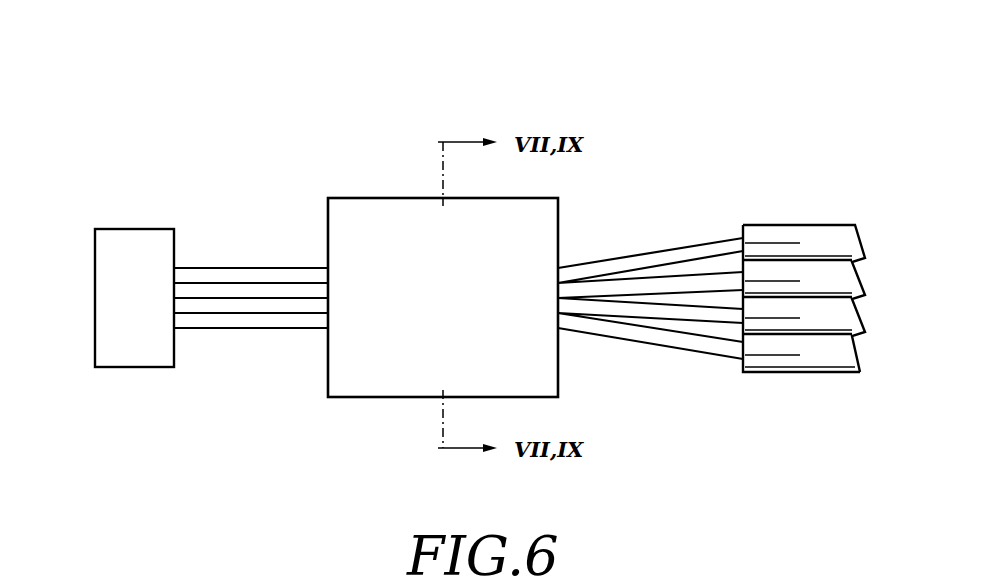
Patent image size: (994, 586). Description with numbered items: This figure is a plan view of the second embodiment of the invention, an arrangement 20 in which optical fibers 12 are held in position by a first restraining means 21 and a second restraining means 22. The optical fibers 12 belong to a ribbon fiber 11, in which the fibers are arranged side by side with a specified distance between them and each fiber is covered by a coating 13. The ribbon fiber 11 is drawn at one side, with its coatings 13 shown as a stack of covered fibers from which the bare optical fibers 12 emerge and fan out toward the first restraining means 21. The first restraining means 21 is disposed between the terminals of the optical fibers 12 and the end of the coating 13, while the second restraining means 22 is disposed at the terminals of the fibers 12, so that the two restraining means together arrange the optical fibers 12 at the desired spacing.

The apparatus 20 is at (386, 98).
The first restraining means 21 is at (328, 168).
The second restraining means 22 is at (118, 212).
The optical fibers 12 is at (632, 263).
The ribbon fiber 11 is at (802, 195).
The coating 13 is at (833, 360).